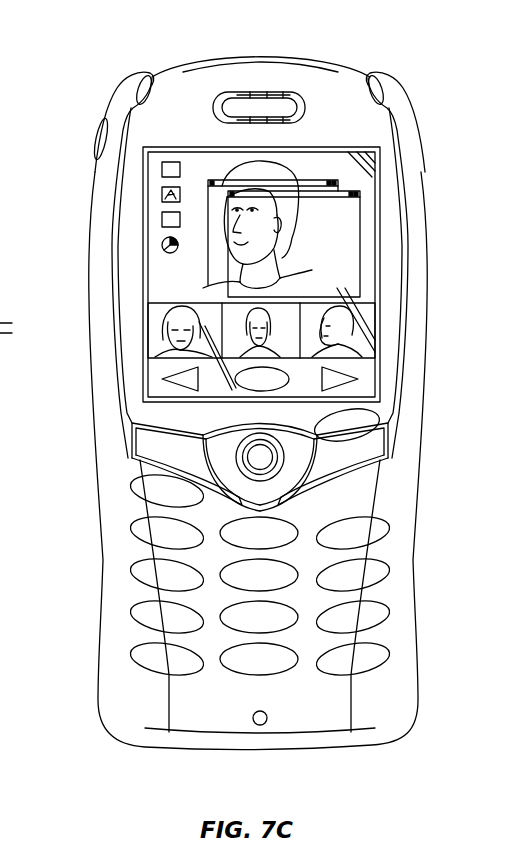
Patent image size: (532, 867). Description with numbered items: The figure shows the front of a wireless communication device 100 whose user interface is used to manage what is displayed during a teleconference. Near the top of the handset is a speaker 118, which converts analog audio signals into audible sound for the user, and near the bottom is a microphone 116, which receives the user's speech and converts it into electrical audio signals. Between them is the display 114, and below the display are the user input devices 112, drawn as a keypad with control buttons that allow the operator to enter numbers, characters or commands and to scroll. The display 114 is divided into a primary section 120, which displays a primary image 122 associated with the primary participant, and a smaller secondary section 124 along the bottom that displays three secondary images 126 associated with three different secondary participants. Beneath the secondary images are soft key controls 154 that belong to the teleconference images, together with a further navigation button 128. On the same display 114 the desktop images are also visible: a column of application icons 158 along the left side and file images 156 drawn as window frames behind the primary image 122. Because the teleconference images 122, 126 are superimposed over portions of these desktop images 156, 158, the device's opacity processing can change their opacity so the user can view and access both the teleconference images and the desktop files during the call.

The wireless communication device 100 is at (433, 60).
The user input devices 112 is at (118, 537).
The display 114 is at (130, 240).
The microphone 116 is at (262, 725).
The speaker 118 is at (243, 92).
The primary section 120 is at (368, 174).
The primary image 122 is at (283, 167).
The secondary section 124 is at (150, 345).
The secondary images 126 is at (163, 312).
The forward navigation button 128 is at (372, 384).
The soft key controls 154 is at (172, 380).
The file images 156 is at (210, 253).
The application icons 158 is at (163, 167).